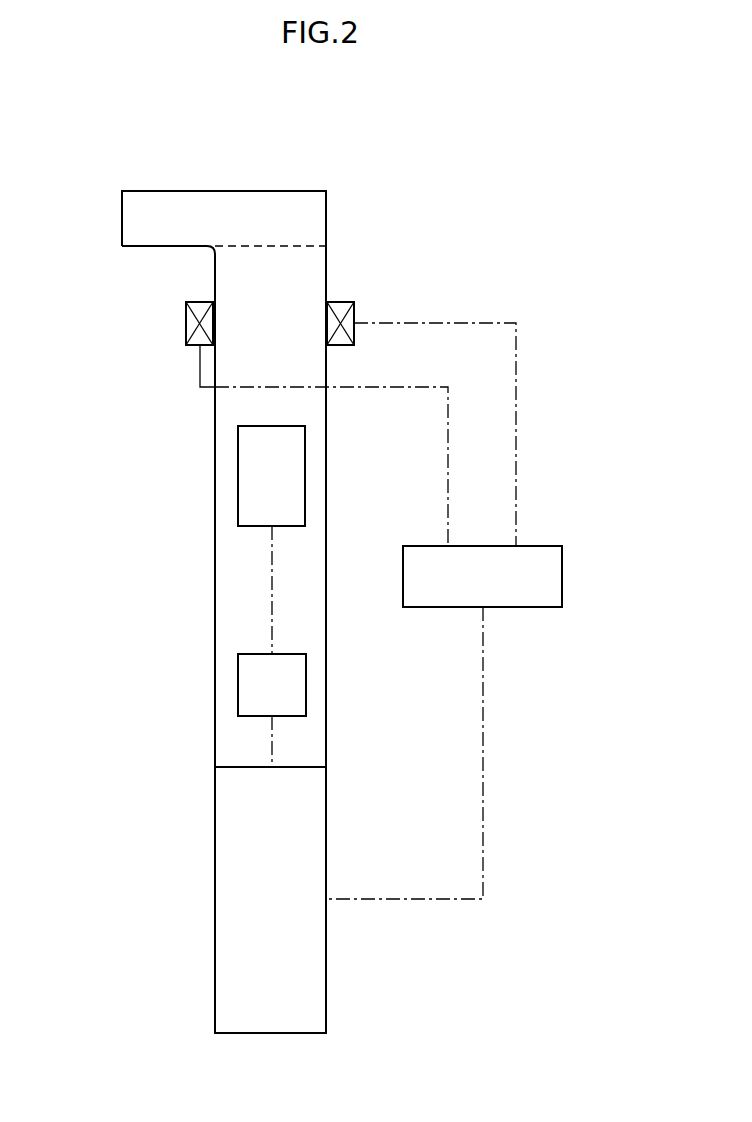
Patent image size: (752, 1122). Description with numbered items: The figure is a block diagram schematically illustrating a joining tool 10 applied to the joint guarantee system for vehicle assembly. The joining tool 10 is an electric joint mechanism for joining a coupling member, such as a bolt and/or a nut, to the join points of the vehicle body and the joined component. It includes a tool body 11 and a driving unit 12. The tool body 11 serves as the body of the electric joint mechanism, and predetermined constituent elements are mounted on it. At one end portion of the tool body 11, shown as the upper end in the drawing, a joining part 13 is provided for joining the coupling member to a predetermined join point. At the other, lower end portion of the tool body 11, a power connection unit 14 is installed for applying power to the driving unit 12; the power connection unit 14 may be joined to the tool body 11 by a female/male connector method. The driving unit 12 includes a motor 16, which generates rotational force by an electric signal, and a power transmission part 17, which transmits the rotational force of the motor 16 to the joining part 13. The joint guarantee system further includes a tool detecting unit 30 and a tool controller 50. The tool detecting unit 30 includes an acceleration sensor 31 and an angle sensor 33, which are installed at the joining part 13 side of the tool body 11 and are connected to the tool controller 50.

The joining tool 10 is at (314, 121).
The tool body 11 is at (215, 568).
The driving unit 12 is at (238, 686).
The joining part 13 is at (122, 218).
The power connection unit 14 is at (216, 897).
The motor 16 is at (306, 684).
The power transmission part 17 is at (238, 476).
The tool detecting unit 30 is at (209, 347).
The acceleration sensor 31 is at (186, 326).
The angle sensor 33 is at (339, 345).
The tool controller 50 is at (562, 575).